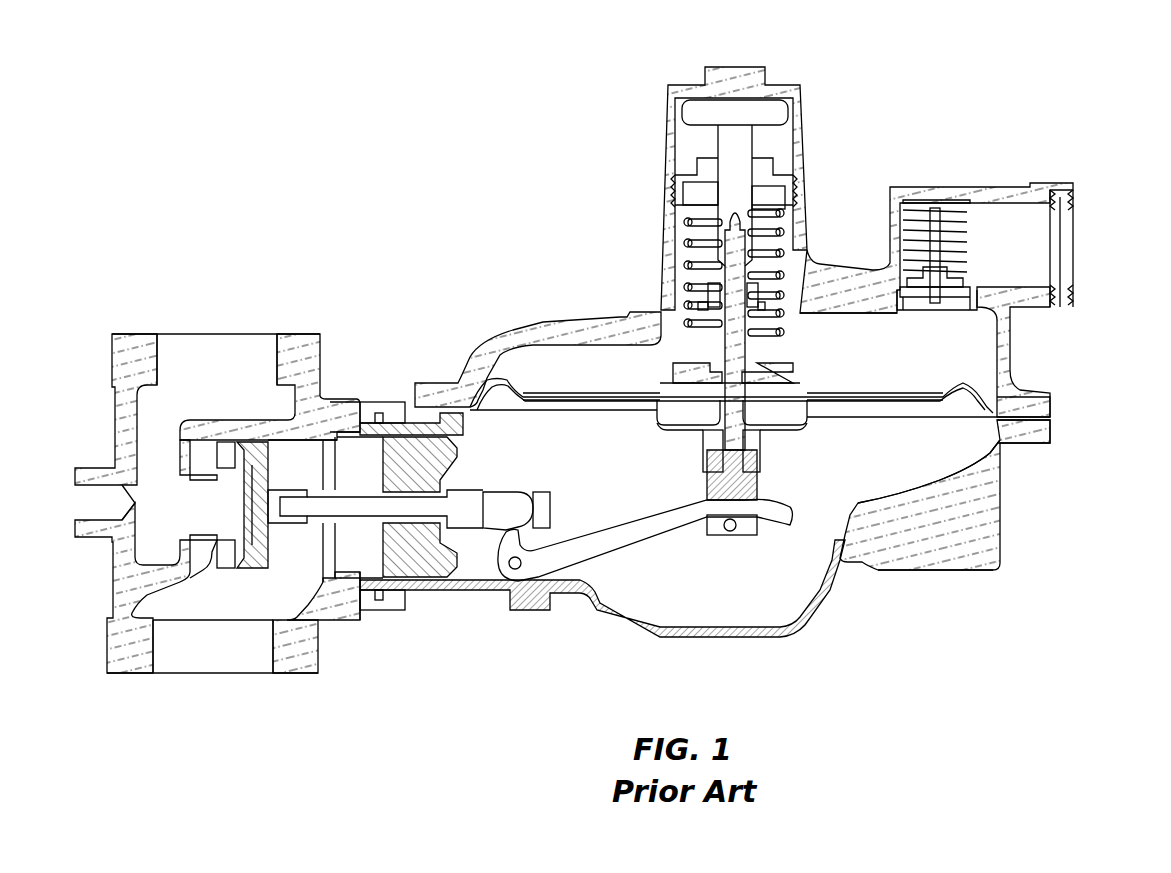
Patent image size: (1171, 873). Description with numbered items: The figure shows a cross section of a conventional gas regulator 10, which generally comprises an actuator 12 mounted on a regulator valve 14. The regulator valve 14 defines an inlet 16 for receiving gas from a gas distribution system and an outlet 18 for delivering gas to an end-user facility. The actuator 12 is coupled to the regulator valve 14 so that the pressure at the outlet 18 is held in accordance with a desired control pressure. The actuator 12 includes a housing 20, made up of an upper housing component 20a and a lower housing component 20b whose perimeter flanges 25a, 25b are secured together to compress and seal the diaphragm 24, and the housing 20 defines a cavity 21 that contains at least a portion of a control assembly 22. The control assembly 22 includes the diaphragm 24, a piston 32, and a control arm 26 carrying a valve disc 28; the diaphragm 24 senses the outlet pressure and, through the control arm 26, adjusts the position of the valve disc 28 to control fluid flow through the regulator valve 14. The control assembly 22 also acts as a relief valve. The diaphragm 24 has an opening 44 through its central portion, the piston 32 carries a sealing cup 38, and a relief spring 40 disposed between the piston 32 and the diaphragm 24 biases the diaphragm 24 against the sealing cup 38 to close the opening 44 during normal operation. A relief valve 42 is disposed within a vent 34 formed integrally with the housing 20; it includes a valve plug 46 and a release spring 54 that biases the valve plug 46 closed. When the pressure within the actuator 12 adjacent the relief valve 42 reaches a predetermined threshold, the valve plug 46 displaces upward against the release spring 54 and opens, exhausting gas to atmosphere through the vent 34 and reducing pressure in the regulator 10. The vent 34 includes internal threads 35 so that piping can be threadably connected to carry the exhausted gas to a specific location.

The gas regulator 10 is at (840, 62).
The actuator 12 is at (805, 213).
The regulator valve 14 is at (313, 334).
The inlet 16 is at (150, 352).
The outlet 18 is at (140, 660).
The housing 20 is at (992, 540).
The upper housing component 20a is at (515, 338).
The lower housing component 20b is at (912, 565).
The cavity 21 is at (968, 455).
The control assembly 22 is at (784, 440).
The diaphragm 24 is at (945, 380).
The flange 25a is at (1050, 403).
The flange 25b is at (1050, 432).
The control arm 26 is at (571, 553).
The valve disc 28 is at (250, 442).
The piston 32 is at (725, 292).
The vent 34 is at (1068, 210).
The internal threads 35 is at (1068, 292).
The sealing cup 38 is at (668, 427).
The relief spring 40 is at (752, 325).
The relief valve 42 is at (965, 258).
The opening 44 is at (712, 355).
The valve plug 46 is at (955, 305).
The release spring 54 is at (965, 218).